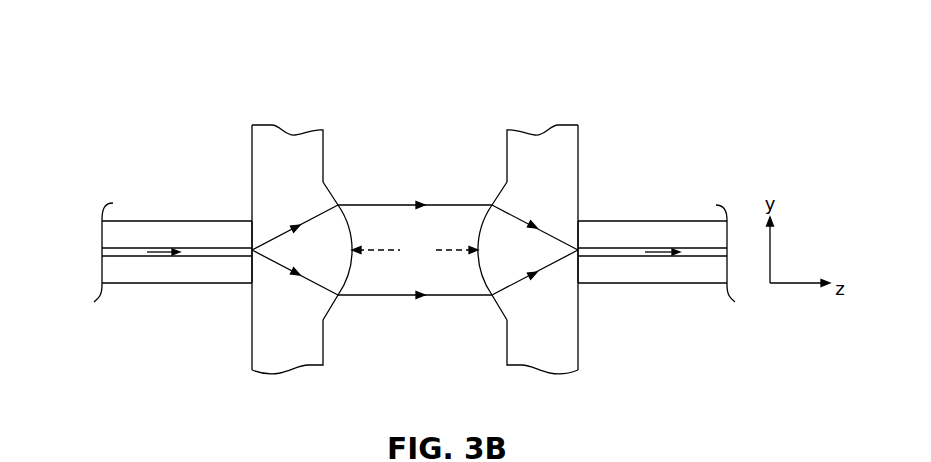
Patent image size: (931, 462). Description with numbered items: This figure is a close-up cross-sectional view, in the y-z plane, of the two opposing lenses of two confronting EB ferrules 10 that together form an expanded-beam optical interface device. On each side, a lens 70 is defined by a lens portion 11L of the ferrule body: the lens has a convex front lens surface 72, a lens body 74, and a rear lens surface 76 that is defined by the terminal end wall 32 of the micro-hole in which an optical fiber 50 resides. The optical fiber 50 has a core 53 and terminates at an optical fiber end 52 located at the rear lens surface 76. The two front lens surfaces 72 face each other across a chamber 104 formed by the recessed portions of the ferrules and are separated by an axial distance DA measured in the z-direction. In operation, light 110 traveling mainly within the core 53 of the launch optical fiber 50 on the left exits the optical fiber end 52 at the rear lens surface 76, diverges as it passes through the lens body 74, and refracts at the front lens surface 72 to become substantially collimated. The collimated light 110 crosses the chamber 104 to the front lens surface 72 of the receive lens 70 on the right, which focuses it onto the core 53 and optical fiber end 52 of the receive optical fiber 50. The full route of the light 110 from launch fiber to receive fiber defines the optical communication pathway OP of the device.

The EB ferrule 10 is at (185, 145).
The lens portion 11L is at (274, 187).
The terminal end wall 32 is at (414, 231).
The rear lens surface 76 is at (252, 233).
The optical fiber 50 is at (130, 210).
The optical fiber end 52 is at (252, 272).
The core 53 is at (123, 258).
The light 110 is at (166, 256).
The lens 70 is at (352, 220).
The front lens surface 72 is at (328, 188).
The lens body 74 is at (277, 217).
The chamber 104 is at (406, 355).
The optical communication pathway OP is at (410, 200).
The axial distance DA is at (415, 249).